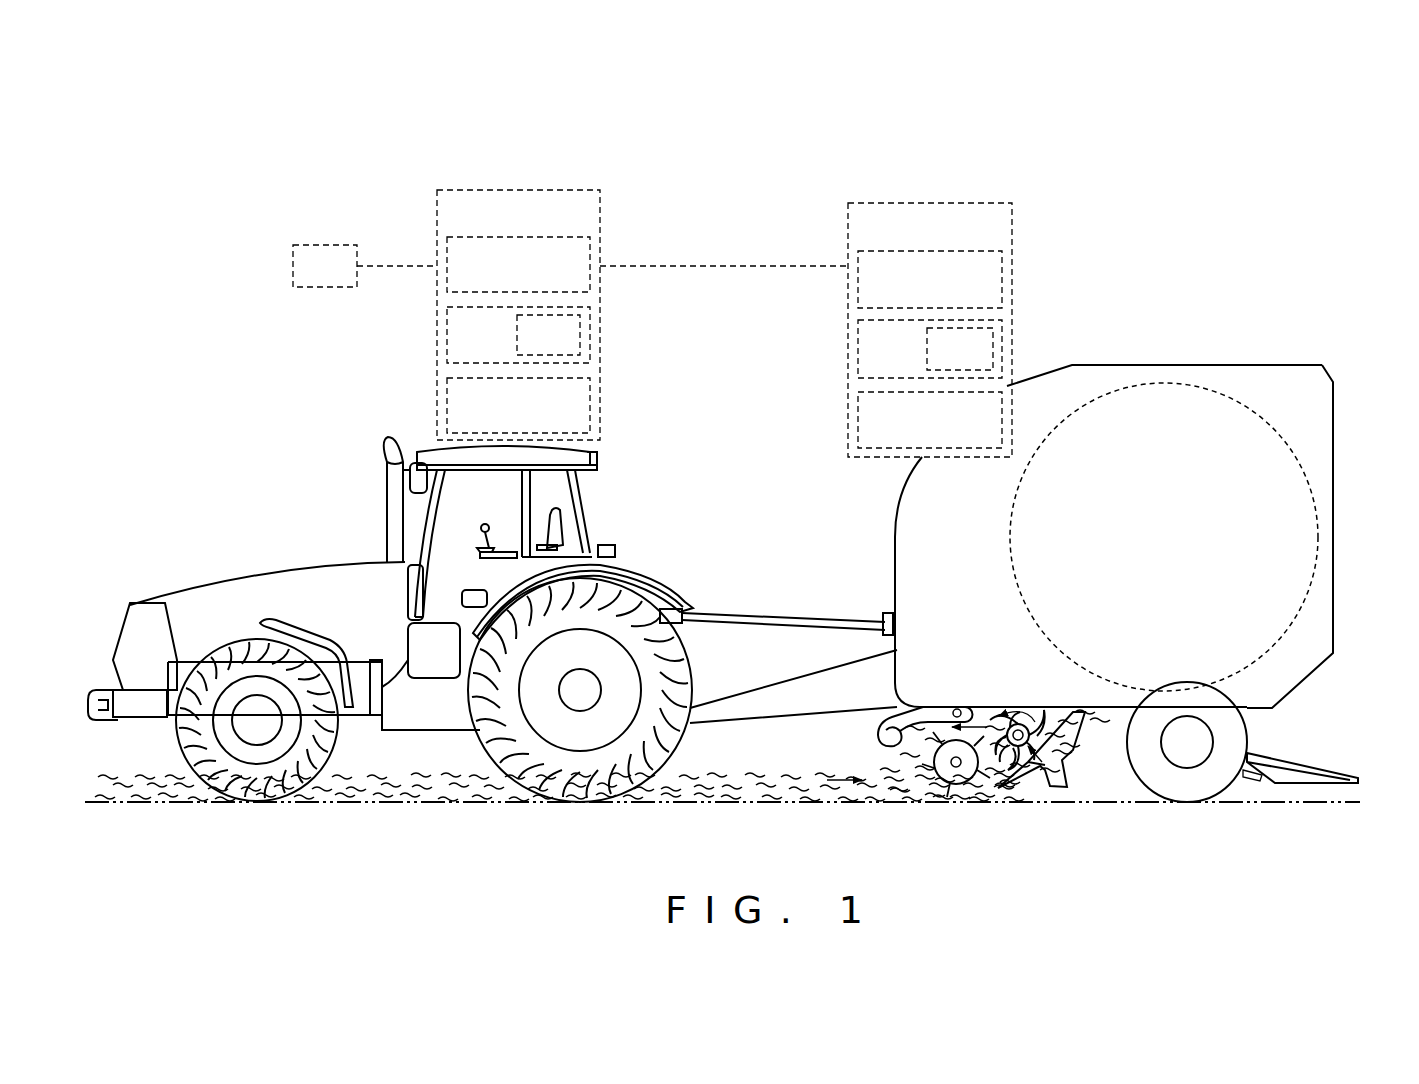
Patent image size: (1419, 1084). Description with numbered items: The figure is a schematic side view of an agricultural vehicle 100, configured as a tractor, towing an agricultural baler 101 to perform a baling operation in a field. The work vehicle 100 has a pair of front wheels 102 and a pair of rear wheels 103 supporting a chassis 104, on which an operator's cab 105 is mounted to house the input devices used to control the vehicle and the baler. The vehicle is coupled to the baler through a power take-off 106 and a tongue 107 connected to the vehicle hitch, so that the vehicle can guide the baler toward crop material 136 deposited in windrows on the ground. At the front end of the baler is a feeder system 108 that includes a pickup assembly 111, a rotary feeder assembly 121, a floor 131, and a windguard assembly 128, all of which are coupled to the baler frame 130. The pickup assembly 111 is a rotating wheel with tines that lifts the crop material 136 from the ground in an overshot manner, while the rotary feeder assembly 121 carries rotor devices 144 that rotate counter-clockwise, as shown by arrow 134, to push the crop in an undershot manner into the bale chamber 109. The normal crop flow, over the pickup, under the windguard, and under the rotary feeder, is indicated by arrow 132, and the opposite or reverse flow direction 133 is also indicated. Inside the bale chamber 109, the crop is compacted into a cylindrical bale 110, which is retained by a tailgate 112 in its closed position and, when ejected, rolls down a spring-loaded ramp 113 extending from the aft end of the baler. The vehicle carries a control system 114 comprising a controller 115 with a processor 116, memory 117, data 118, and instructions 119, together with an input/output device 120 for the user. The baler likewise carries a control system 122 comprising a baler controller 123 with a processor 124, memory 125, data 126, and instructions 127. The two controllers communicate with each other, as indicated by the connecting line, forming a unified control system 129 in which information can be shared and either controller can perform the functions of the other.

The agricultural vehicle 100 is at (233, 535).
The agricultural baler 101 is at (1081, 352).
The front wheels 102 is at (177, 737).
The rear wheels 103 is at (673, 737).
The chassis 104 is at (405, 727).
The operator's cab 105 is at (445, 478).
The power take-off 106 is at (737, 613).
The tongue 107 is at (770, 690).
The feeder system 108 is at (898, 752).
The bale chamber 109 is at (1213, 368).
The bale 110 is at (1295, 457).
The pickup assembly 111 is at (950, 773).
The tailgate 112 is at (1318, 365).
The ramp 113 is at (1327, 767).
The control system 114 is at (634, 206).
The controller 115 is at (528, 224).
The processor 116 is at (461, 281).
The memory 117 is at (453, 351).
The data 118 is at (524, 351).
The instructions 119 is at (460, 421).
The input/output device 120 is at (301, 279).
The rotary feeder assembly 121 is at (1030, 763).
The control system 122 is at (836, 214).
The baler controller 123 is at (941, 239).
The processor 124 is at (874, 295).
The memory 125 is at (867, 363).
The data 126 is at (936, 363).
The instructions 127 is at (874, 436).
The windguard assembly 128 is at (887, 717).
The unified control system 129 is at (662, 142).
The frame 130 is at (1093, 707).
The floor 131 is at (1025, 755).
The normal flow direction 132 is at (835, 795).
The reverse flow direction 133 is at (968, 725).
The arrow 134 is at (1017, 703).
The crop material 136 is at (380, 790).
The rotor devices 144 is at (1033, 730).